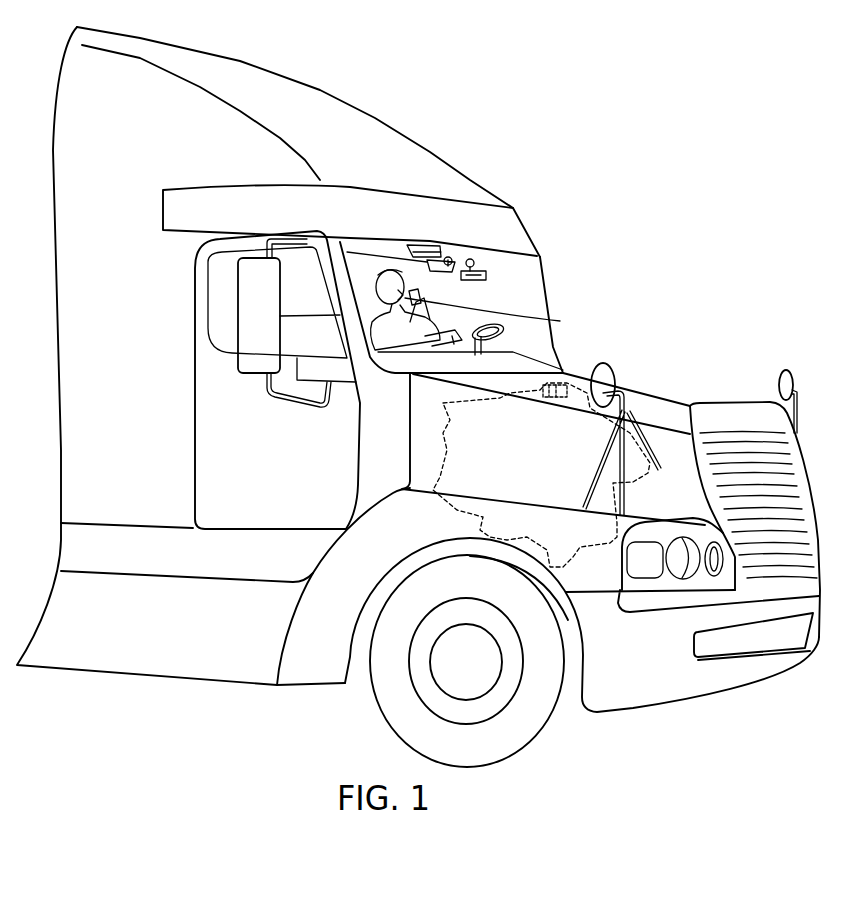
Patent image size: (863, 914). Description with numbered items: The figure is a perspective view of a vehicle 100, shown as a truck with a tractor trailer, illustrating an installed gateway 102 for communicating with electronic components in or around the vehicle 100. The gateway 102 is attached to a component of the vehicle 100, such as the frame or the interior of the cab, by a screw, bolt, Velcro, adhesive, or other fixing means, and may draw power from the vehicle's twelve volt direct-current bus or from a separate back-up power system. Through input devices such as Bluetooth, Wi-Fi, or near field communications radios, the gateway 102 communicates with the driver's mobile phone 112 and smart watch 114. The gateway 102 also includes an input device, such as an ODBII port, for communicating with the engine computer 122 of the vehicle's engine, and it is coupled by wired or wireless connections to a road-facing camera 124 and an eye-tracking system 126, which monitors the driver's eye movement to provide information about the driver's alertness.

The vehicle 100 is at (320, 87).
The gateway 102 is at (437, 240).
The eye-tracking system 126 is at (447, 258).
The road-facing camera 124 is at (490, 267).
The mobile phone 112 is at (548, 320).
The engine computer 122 is at (570, 382).
The smart watch 114 is at (480, 324).